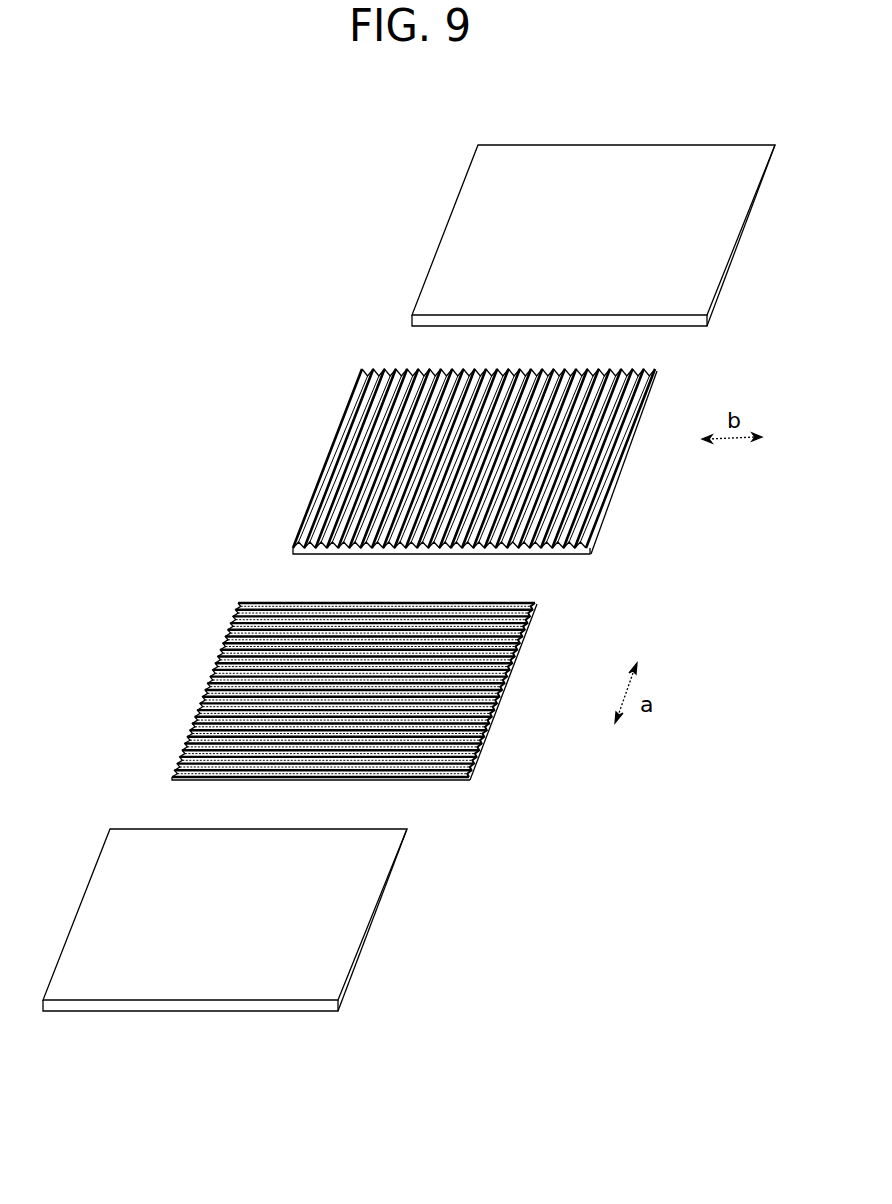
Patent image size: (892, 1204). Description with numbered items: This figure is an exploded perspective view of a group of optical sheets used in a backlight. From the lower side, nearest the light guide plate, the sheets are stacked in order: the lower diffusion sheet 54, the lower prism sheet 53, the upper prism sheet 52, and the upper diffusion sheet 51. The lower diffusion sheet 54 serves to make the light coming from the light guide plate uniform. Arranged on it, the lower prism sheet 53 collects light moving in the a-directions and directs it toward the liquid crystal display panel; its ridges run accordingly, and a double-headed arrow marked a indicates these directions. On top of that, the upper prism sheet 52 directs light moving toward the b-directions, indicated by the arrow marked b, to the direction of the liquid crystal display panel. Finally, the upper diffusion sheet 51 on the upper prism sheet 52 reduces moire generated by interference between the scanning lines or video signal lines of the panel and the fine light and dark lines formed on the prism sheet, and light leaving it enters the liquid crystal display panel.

The upper diffusion sheet 51 is at (747, 237).
The upper prism sheet 52 is at (600, 509).
The lower prism sheet 53 is at (483, 742).
The lower diffusion sheet 54 is at (372, 927).